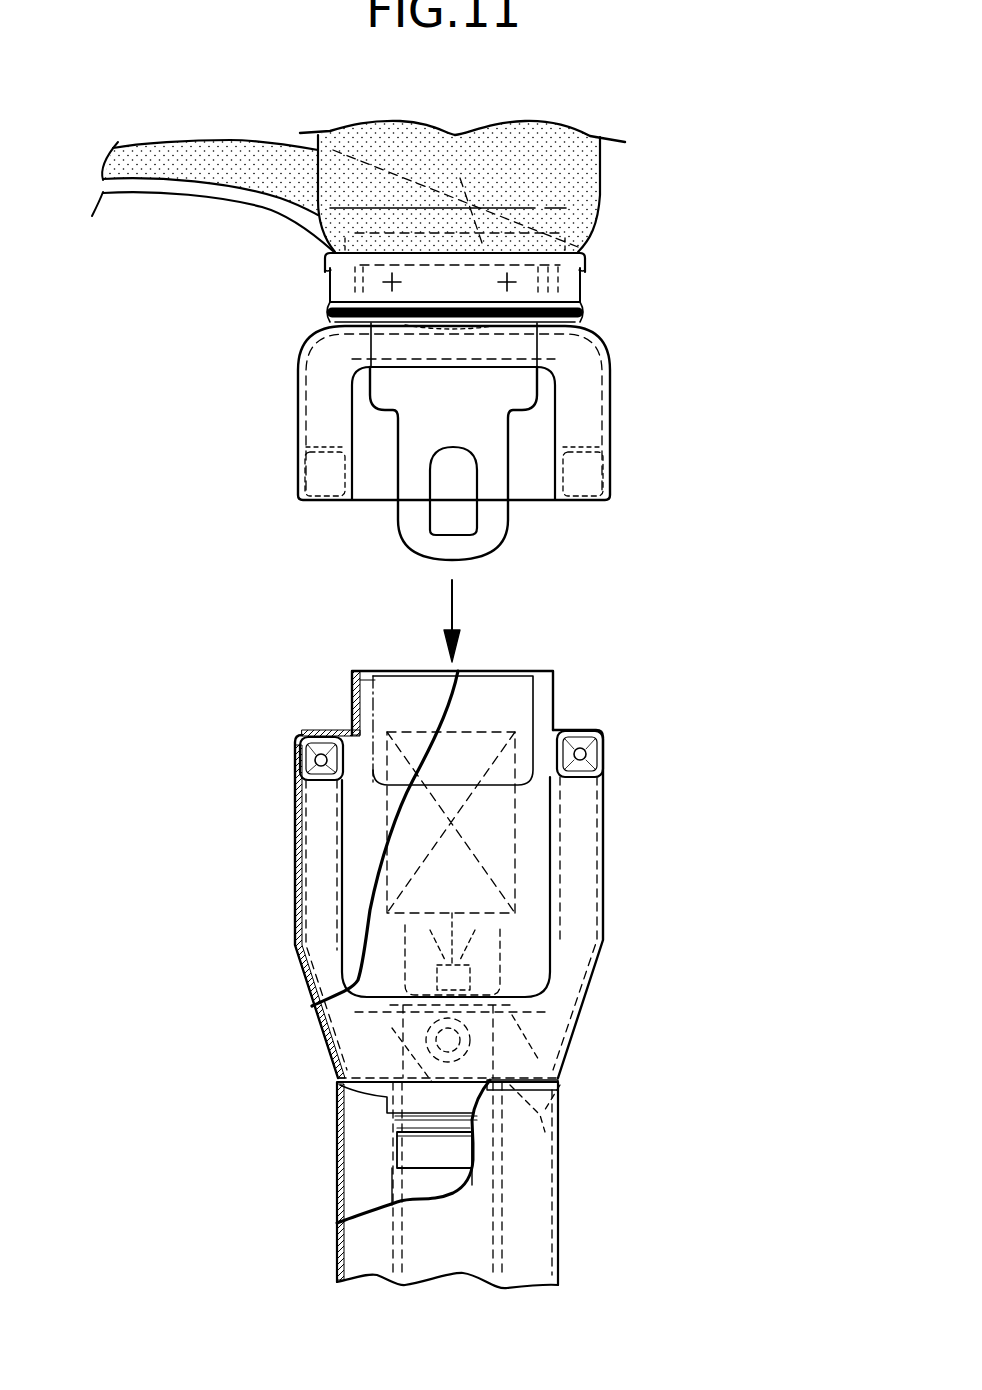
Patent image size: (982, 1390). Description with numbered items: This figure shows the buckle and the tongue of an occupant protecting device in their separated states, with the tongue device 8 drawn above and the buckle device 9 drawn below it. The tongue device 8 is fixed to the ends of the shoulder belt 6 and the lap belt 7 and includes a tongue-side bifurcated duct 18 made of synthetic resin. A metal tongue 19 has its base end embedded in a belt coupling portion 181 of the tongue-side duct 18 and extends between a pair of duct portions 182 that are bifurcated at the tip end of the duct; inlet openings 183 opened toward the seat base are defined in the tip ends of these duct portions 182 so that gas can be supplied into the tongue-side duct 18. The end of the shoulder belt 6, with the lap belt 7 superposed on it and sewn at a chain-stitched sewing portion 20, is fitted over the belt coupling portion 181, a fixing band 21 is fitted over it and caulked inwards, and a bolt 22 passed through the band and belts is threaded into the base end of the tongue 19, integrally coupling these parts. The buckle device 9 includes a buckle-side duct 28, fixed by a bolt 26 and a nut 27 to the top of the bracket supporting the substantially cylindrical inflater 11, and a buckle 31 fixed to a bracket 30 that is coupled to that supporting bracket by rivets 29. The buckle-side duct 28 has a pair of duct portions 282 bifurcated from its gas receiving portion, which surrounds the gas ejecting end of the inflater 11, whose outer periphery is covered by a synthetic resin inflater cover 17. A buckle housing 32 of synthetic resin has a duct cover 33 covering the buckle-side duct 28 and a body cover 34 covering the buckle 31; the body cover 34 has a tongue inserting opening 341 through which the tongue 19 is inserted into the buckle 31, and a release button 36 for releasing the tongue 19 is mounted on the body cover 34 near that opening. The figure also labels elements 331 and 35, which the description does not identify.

The shoulder belt 6 is at (499, 186).
The lap belt 7 is at (131, 186).
The tongue device 8 is at (277, 359).
The buckle device 9 is at (455, 848).
The inflater 11 is at (394, 1157).
The inflater cover 17 is at (393, 1184).
The tongue-side bifurcated duct 18 is at (470, 426).
The belt coupling portion 181 is at (455, 194).
The duct portions 182 is at (298, 410).
The inlet openings 183 is at (312, 502).
The tongue 19 is at (421, 431).
The sewing portion 20 is at (563, 298).
The fixing band 21 is at (332, 268).
The bolt 22 is at (452, 334).
The bolt 26 is at (451, 863).
The nut 27 is at (423, 951).
The buckle-side duct 28 is at (393, 838).
The duct portions 282 is at (327, 847).
The rivets 29 is at (402, 1040).
The bracket 30 is at (547, 1031).
The buckle 31 is at (558, 845).
The buckle housing 32 is at (637, 883).
The duct cover 33 is at (268, 872).
The side wall top 331 is at (326, 737).
The body cover 34 is at (481, 699).
The tongue inserting opening 341 is at (390, 671).
The ring terminal 35 is at (318, 760).
The release button 36 is at (494, 688).